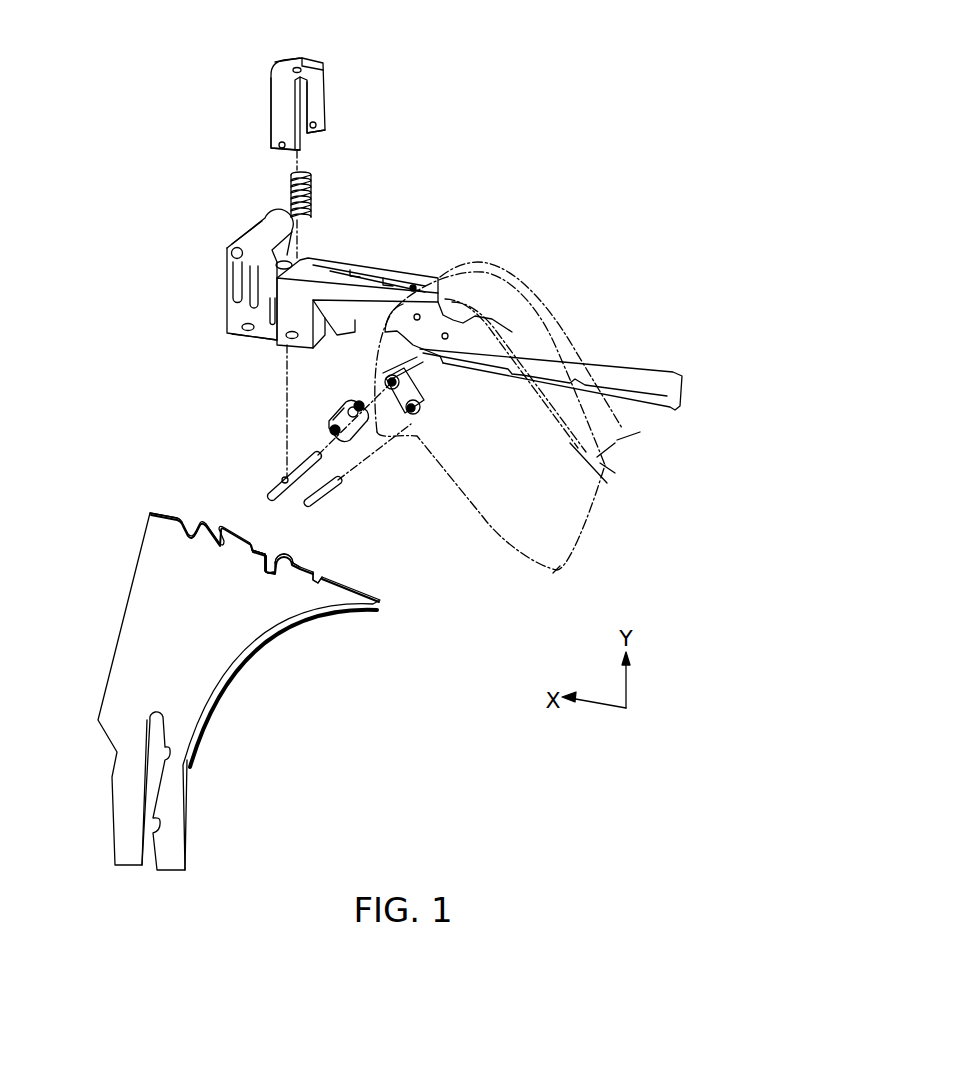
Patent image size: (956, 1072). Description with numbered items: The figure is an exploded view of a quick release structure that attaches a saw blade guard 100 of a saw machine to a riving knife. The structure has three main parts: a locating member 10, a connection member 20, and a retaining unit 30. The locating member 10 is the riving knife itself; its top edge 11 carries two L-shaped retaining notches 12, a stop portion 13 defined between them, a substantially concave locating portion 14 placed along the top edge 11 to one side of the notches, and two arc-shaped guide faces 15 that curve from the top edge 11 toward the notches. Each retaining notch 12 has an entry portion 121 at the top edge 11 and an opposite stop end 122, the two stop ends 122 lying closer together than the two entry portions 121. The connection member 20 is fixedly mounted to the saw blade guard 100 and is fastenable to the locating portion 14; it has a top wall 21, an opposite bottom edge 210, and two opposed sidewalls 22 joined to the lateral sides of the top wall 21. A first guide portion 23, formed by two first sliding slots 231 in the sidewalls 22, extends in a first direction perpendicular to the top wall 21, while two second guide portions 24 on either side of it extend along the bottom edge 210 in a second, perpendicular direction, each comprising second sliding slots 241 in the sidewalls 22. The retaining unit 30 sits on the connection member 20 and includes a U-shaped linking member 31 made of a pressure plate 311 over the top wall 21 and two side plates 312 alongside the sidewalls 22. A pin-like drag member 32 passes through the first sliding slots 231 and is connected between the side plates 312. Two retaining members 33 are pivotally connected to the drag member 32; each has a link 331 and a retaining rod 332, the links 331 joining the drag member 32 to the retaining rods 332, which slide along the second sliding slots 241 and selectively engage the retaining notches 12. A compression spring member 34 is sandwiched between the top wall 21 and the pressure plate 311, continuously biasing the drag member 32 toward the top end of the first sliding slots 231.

The locating member 10 is at (135, 617).
The top edge 11 is at (163, 511).
The retaining notches 12 is at (258, 562).
The entry portion 121 is at (266, 560).
The stop end 122 is at (279, 576).
The stop portion 13 is at (294, 560).
The locating portion 14 is at (235, 530).
The guide faces 15 is at (268, 552).
The connection member 20 is at (394, 268).
The top wall 21 is at (308, 279).
The sidewalls 22 is at (228, 315).
The first guide portion 23 is at (272, 298).
The first sliding slots 231 is at (258, 293).
The second guide portions 24 is at (242, 329).
The second sliding slots 241 is at (249, 341).
The bottom edge 210 is at (287, 350).
The retaining unit 30 is at (322, 57).
The linking member 31 is at (326, 93).
The pressure plate 311 is at (281, 75).
The side plates 312 is at (278, 125).
The drag member 32 is at (300, 465).
The retaining members 33 is at (340, 400).
The link 331 is at (426, 392).
The retaining rod 332 is at (328, 490).
The spring member 34 is at (314, 183).
The saw blade guard 100 is at (581, 348).